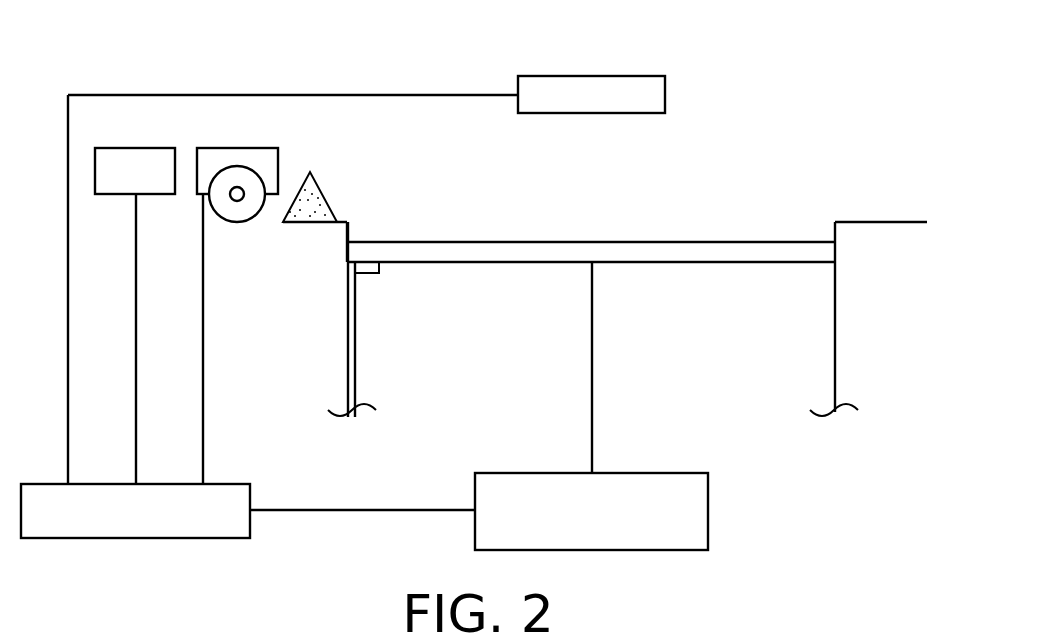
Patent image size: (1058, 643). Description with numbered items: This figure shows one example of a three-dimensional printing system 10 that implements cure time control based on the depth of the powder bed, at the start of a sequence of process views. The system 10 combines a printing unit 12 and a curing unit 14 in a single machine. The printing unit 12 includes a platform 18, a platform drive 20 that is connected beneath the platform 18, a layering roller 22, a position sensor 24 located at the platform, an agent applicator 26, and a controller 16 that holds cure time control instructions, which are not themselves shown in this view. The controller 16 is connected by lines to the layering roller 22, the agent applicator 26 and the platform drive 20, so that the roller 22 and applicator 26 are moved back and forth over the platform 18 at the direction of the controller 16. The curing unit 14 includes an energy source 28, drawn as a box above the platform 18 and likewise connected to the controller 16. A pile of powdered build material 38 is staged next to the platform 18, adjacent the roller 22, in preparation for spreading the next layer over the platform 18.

The 3D printing system 10 is at (103, 51).
The printing unit 12 is at (379, 189).
The curing unit 14 is at (700, 49).
The controller 16 is at (228, 490).
The platform 18 is at (733, 252).
The platform drive 20 is at (510, 478).
The layering roller 22 is at (237, 148).
The position sensor 24 is at (355, 335).
The agent applicator 26 is at (135, 148).
The energy source 28 is at (592, 76).
The powdered build material 38 is at (320, 202).